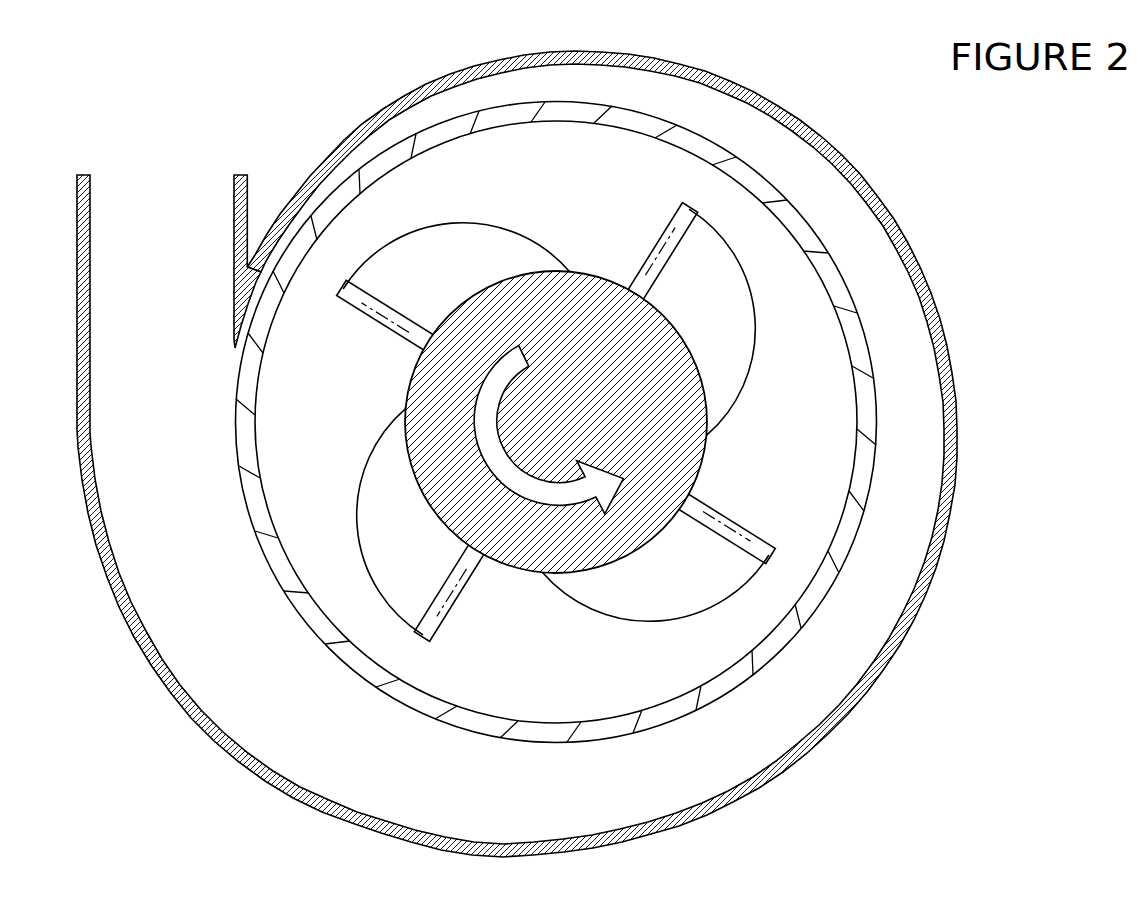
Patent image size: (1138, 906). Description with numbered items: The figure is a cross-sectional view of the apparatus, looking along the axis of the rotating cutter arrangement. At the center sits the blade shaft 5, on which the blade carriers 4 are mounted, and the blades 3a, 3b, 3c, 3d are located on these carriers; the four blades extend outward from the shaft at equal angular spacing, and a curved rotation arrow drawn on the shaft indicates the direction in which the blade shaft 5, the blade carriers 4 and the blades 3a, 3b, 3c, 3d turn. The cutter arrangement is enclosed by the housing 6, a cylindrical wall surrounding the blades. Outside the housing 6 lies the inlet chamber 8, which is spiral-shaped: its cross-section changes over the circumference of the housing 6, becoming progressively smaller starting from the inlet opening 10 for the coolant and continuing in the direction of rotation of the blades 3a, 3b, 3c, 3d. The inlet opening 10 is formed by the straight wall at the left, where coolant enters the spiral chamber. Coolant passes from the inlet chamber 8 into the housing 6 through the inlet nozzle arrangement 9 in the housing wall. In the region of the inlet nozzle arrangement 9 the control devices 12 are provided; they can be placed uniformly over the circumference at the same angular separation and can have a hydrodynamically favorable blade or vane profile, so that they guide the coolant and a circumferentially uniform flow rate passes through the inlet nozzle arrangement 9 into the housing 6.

The blade 3a is at (365, 307).
The blade 3b is at (678, 226).
The blade 3c is at (762, 547).
The blade 3d is at (441, 623).
The blade carrier 4 is at (466, 236).
The blade shaft 5 is at (512, 571).
The housing 6 is at (265, 504).
The inlet chamber 8 is at (173, 188).
The inlet nozzle arrangement 9 is at (273, 563).
The inlet opening 10 is at (90, 184).
The control device 12 is at (248, 470).